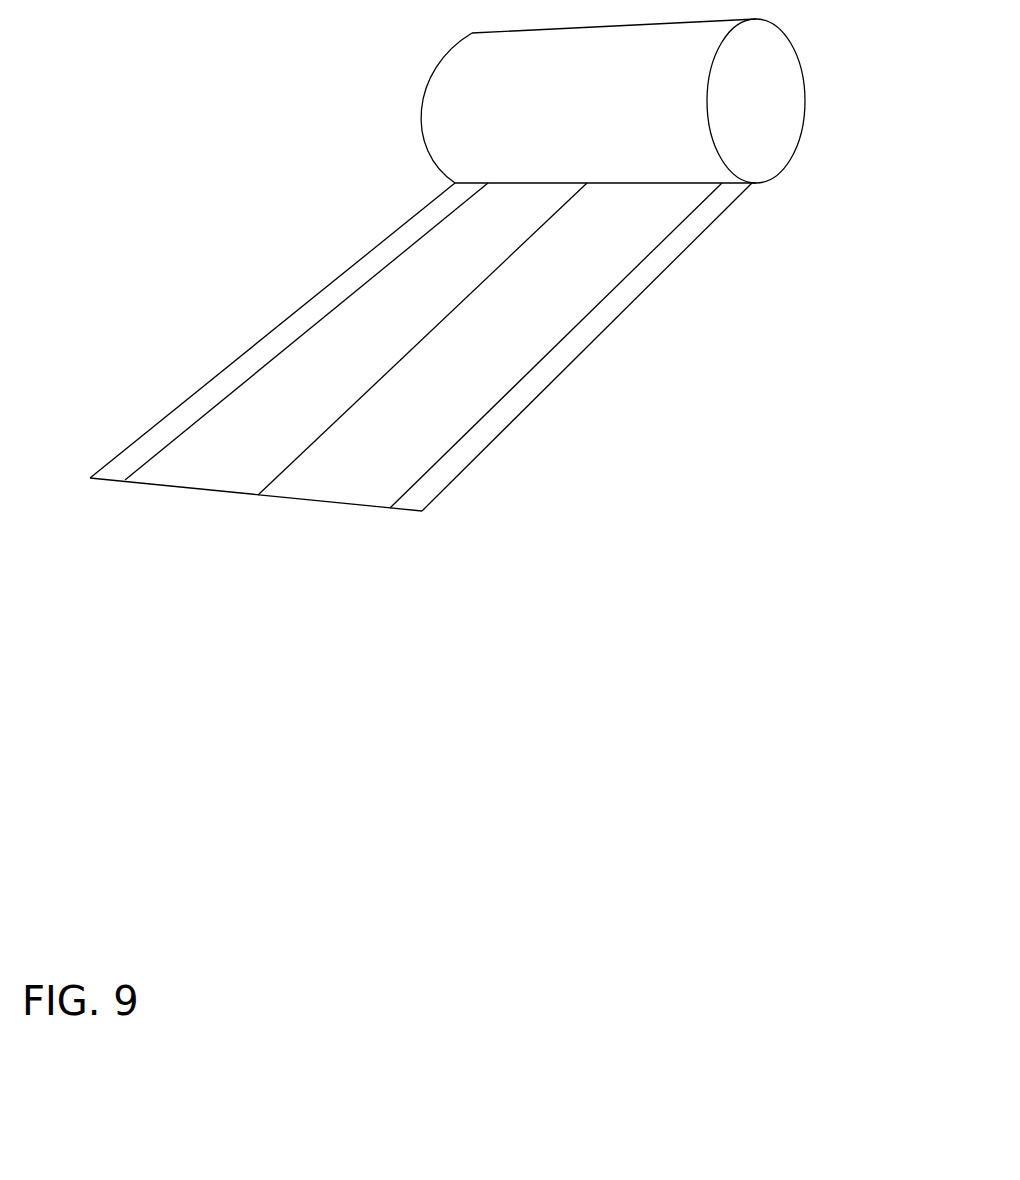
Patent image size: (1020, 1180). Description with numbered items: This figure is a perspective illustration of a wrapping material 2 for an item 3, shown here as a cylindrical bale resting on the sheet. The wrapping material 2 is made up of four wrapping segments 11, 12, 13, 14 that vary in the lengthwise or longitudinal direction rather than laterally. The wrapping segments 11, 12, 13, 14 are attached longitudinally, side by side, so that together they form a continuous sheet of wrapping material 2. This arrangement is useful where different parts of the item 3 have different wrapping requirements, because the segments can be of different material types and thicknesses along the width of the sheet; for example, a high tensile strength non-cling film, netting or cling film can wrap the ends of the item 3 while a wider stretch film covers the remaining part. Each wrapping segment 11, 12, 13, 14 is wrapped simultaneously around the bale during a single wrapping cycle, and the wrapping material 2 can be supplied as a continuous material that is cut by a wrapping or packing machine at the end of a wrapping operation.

The wrapping material 2 is at (464, 279).
The item 3 is at (613, 101).
The wrapping segment 11 is at (373, 268).
The wrapping segment 12 is at (175, 463).
The wrapping segment 13 is at (622, 298).
The wrapping segment 14 is at (457, 380).